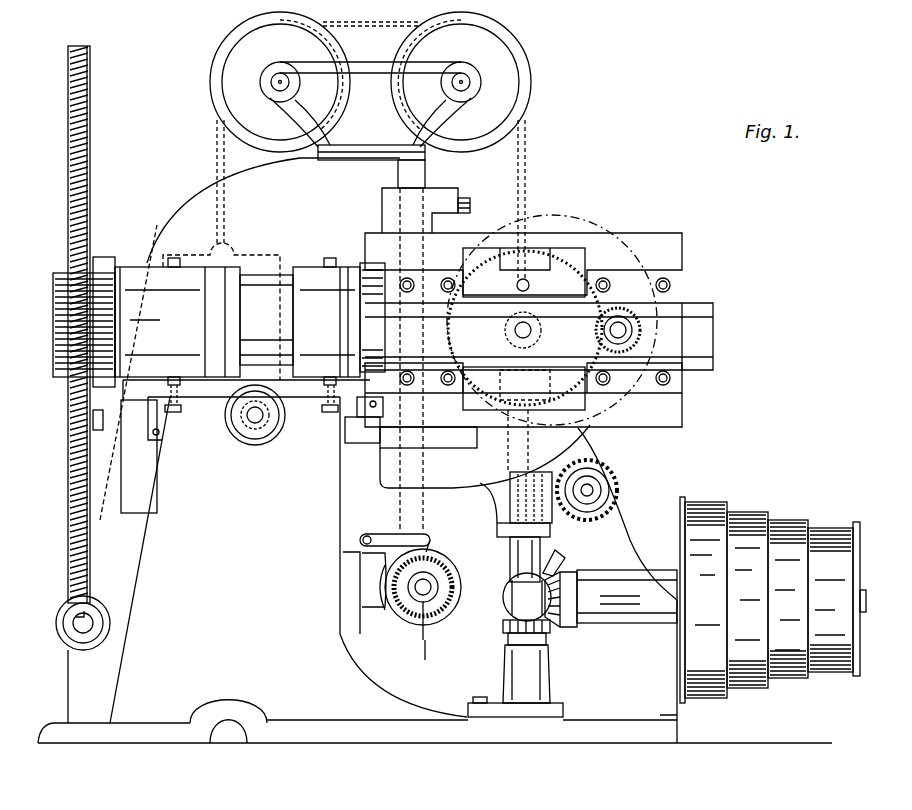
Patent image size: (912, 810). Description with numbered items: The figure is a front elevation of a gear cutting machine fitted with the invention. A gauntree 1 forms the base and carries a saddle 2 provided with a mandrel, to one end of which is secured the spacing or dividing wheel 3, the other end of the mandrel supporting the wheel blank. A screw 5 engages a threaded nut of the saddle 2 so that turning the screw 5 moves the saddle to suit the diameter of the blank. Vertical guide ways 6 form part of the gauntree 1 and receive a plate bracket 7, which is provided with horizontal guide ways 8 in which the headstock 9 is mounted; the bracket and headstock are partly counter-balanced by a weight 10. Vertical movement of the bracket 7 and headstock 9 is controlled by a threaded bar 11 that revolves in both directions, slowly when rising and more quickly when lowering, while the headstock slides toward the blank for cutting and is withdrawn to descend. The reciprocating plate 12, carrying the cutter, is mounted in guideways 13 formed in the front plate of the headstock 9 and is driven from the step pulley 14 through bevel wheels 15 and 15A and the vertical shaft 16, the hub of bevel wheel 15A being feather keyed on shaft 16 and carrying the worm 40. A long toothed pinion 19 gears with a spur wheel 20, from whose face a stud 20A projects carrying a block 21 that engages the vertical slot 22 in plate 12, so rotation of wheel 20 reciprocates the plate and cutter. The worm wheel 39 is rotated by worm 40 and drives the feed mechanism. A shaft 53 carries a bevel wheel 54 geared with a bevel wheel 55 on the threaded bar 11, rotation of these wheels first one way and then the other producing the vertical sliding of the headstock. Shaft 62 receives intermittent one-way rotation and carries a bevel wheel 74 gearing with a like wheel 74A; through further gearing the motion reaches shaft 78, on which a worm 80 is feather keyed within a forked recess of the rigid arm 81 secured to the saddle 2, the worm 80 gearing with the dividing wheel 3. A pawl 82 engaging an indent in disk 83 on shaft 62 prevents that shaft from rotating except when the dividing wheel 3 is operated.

The gauntree 1 is at (435, 561).
The saddle 2 is at (140, 268).
The spacing or dividing wheel 3 is at (68, 178).
The screw 5 is at (240, 428).
The vertical guide ways 6 is at (376, 506).
The plate bracket 7 is at (382, 210).
The horizontal guide ways 8 is at (462, 198).
The headstock 9 is at (553, 232).
The weight 10 is at (280, 255).
The threaded bar 11 is at (510, 552).
The reciprocating plate 12 is at (539, 336).
The guideways 13 is at (448, 278).
The step pulley 14 is at (782, 504).
The bevel wheel 15 is at (578, 585).
The bevel wheel 15A is at (565, 565).
The vertical shaft 16 is at (508, 456).
The long toothed pinion 19 is at (618, 330).
The spur wheel 20 is at (560, 252).
The stud 20A is at (520, 279).
The block 21 is at (510, 318).
The vertical slot 22 is at (525, 384).
The worm wheel 39 is at (615, 488).
The worm 40 is at (552, 480).
The shaft 53 is at (505, 598).
The bevel wheel 54 is at (505, 624).
The bevel wheel 55 is at (510, 638).
The shaft 62 is at (450, 583).
The bevel wheel 74 is at (415, 651).
The bevel wheel 74A is at (398, 610).
The shaft 78 is at (73, 630).
The worm 80 is at (58, 612).
The rigid arm 81 is at (120, 497).
The pawl 82 is at (432, 540).
The disk 83 is at (430, 622).